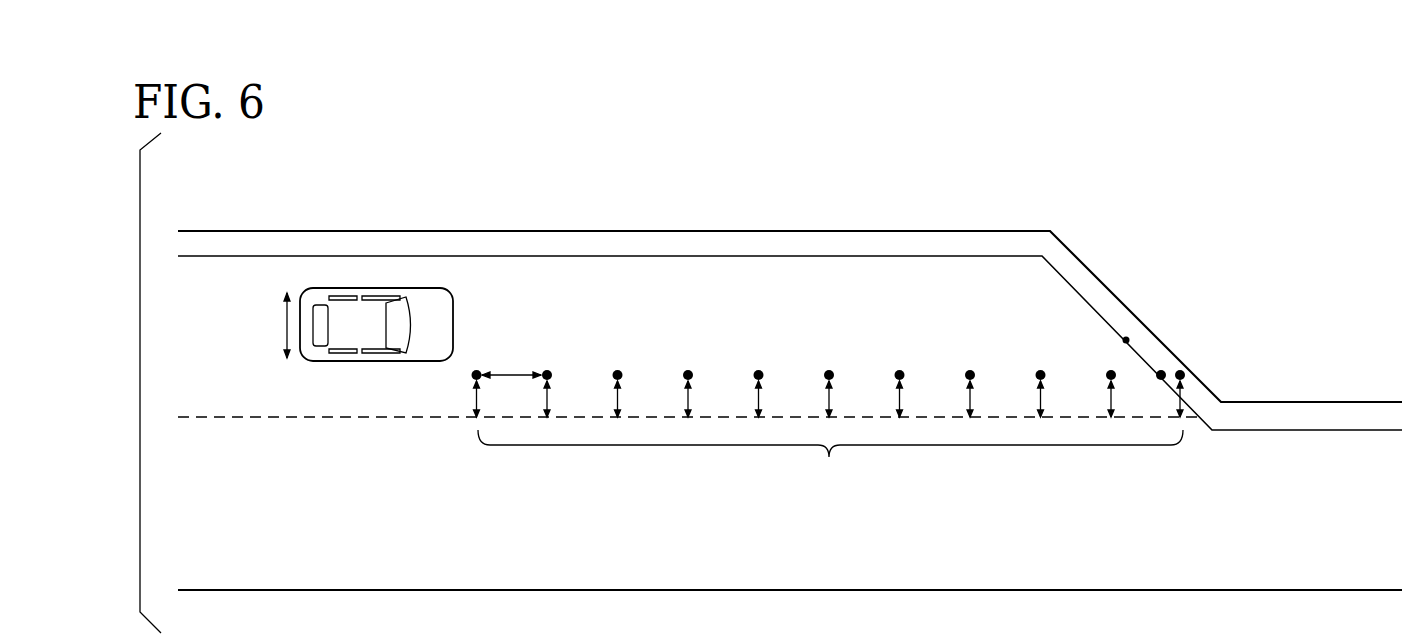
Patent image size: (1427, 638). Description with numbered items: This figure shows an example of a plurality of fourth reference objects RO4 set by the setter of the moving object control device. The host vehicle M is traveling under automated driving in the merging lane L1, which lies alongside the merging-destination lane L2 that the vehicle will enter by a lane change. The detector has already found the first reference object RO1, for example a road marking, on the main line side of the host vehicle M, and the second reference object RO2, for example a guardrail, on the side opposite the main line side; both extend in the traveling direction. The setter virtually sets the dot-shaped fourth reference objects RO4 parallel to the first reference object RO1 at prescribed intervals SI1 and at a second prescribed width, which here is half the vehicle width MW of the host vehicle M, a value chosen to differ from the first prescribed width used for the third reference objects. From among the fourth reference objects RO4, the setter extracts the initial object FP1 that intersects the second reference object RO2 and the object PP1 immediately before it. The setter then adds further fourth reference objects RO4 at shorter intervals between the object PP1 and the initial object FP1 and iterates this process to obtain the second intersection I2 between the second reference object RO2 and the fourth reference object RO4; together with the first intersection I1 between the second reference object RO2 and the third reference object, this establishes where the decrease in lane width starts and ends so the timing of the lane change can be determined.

The second reference object RO2 is at (637, 230).
The merging lane L1 is at (210, 344).
The merging-destination lane L2 is at (208, 518).
The first reference object RO1 is at (327, 419).
The host vehicle M is at (453, 313).
The vehicle width MW is at (287, 326).
The prescribed interval SI1 is at (510, 372).
The fourth reference objects RO4 is at (828, 434).
The object immediately before the initial object PP1 is at (1108, 369).
The first intersection I1 is at (1128, 337).
The second intersection I2 is at (1163, 371).
The initial object FP1 is at (1187, 374).